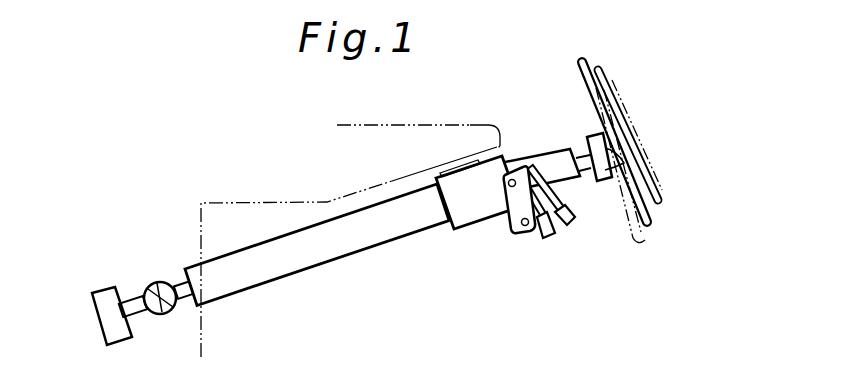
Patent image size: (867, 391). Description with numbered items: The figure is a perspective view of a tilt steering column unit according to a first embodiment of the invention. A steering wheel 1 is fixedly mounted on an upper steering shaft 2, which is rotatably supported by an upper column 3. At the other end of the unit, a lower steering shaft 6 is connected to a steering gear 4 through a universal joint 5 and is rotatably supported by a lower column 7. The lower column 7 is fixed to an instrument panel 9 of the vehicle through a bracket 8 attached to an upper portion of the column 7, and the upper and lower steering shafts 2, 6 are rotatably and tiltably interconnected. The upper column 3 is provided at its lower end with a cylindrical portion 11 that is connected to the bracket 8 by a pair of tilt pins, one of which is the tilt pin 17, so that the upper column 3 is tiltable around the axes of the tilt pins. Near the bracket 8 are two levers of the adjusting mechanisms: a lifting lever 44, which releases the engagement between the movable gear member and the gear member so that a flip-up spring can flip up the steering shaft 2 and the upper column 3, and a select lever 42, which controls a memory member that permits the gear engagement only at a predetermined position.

The steering wheel 1 is at (603, 67).
The upper steering shaft 2 is at (590, 174).
The upper column 3 is at (562, 157).
The steering gear 4 is at (118, 330).
The universal joint 5 is at (158, 285).
The lower steering shaft 6 is at (182, 296).
The lower column 7 is at (338, 247).
The bracket 8 is at (462, 219).
The instrument panel 9 is at (431, 133).
The cylindrical portion 11 is at (505, 158).
The tilt pin 17 is at (513, 175).
The select lever 42 is at (543, 240).
The lifting lever 44 is at (573, 227).